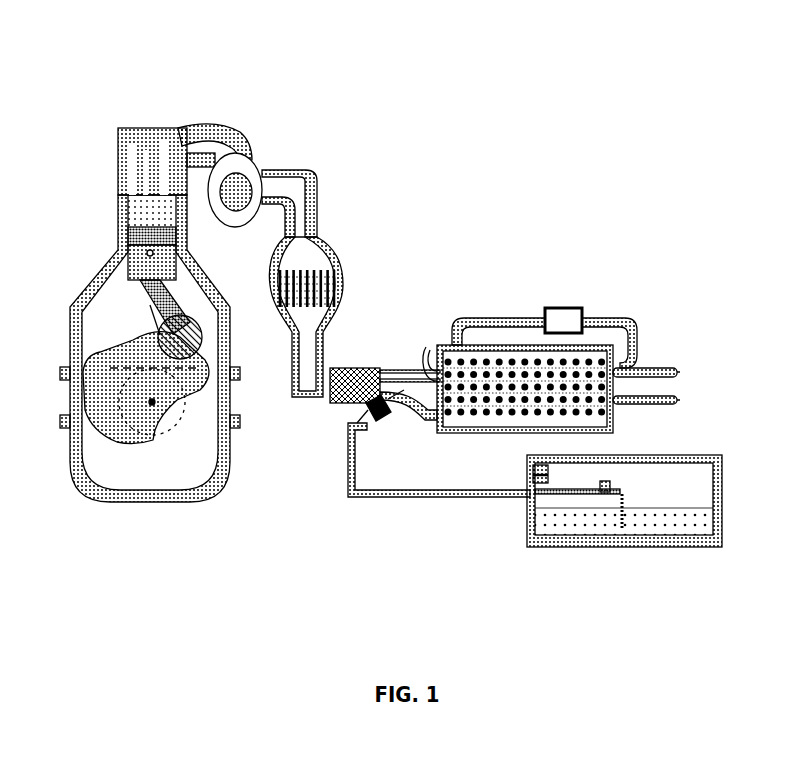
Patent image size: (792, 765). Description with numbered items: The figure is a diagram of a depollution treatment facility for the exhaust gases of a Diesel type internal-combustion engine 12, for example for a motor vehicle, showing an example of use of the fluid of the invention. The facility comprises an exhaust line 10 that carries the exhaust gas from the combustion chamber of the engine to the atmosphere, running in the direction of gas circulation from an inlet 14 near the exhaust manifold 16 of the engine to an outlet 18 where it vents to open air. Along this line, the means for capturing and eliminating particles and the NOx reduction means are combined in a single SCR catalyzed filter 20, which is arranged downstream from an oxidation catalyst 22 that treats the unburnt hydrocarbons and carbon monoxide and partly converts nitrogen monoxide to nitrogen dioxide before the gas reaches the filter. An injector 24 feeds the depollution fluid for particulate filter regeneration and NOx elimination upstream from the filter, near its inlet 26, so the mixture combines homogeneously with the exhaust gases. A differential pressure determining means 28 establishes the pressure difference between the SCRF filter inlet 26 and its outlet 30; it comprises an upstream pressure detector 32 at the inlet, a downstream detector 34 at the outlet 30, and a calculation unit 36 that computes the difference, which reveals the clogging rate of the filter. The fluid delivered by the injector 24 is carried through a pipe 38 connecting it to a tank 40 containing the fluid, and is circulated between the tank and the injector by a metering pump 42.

The exhaust line 10 is at (613, 256).
The Diesel type internal-combustion engine 12 is at (180, 93).
The inlet 14 is at (261, 175).
The exhaust manifold 16 is at (208, 126).
The outlet 18 is at (678, 380).
The SCR catalyzed filter 20 is at (520, 383).
The oxidation catalyst 22 is at (349, 287).
The injector 24 is at (387, 414).
The SCRF filter inlet 26 is at (433, 364).
The differential pressure determining means 28 is at (554, 296).
The SCRF filter outlet 30 is at (620, 404).
The upstream pressure detector 32 is at (445, 345).
The downstream detector 34 is at (619, 365).
The calculation unit 36 is at (583, 310).
The pipe 38 is at (445, 496).
The tank 40 is at (647, 544).
The metering pump 42 is at (603, 484).